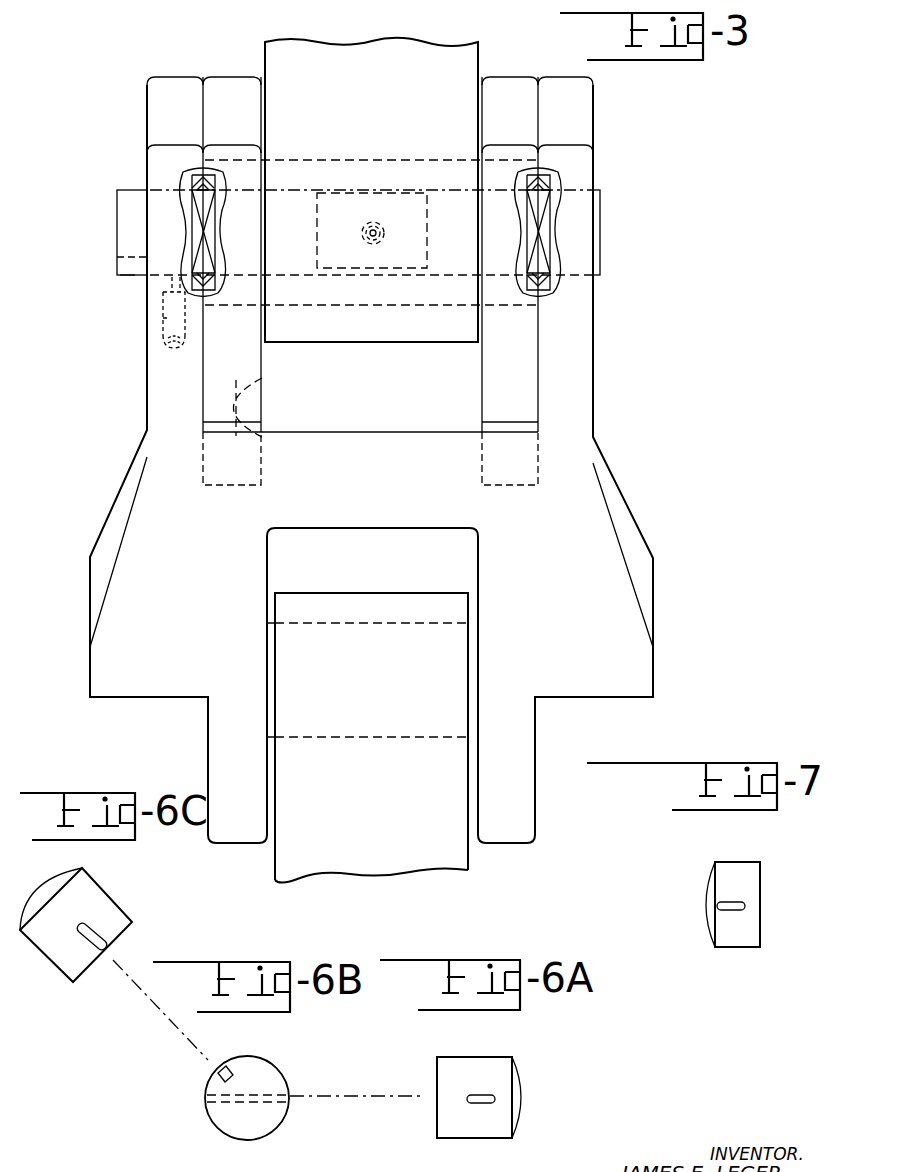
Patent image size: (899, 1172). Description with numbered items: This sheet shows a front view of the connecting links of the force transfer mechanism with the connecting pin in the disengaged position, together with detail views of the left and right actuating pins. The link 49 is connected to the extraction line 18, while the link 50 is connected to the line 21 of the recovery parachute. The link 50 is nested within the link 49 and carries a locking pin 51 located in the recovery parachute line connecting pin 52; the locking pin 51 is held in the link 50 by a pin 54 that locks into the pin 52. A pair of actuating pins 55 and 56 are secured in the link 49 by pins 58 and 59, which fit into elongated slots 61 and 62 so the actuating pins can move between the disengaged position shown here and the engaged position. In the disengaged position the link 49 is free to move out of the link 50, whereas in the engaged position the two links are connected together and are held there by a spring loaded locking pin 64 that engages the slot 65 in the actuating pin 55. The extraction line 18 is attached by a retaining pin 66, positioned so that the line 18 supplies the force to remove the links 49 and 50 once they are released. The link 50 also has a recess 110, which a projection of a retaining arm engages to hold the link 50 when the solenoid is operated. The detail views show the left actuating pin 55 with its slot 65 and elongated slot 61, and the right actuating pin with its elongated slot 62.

In FIG. 3, the extraction line 18 is at (456, 872).
In FIG. 3, the line 21 is at (347, 56).
In FIG. 3, the link 49 is at (597, 342).
In FIG. 3, the link 50 is at (237, 77).
In FIG. 3, the locking pin 51 is at (427, 276).
In FIG. 3, the recovery parachute line connecting pin 52 is at (333, 306).
In FIG. 3, the pin 54 is at (383, 230).
In FIG. 3, the actuating pin 55 is at (130, 190).
In FIG. 6C, the actuating pin 55 is at (53, 962).
In FIG. 3, the actuating pin 56 is at (601, 216).
In FIG. 3, the pin 58 is at (175, 232).
In FIG. 3, the pin 59 is at (572, 231).
In FIG. 6B, the elongated slot 61 is at (293, 1093).
In FIG. 6A, the elongated slot 61 is at (495, 1099).
In FIG. 7, the elongated slot 62 is at (720, 906).
In FIG. 3, the spring loaded locking pin 64 is at (136, 325).
In FIG. 3, the slot 65 is at (128, 273).
In FIG. 6C, the slot 65 is at (100, 953).
In FIG. 3, the retaining pin 66 is at (374, 739).
In FIG. 3, the recess 110 is at (262, 399).